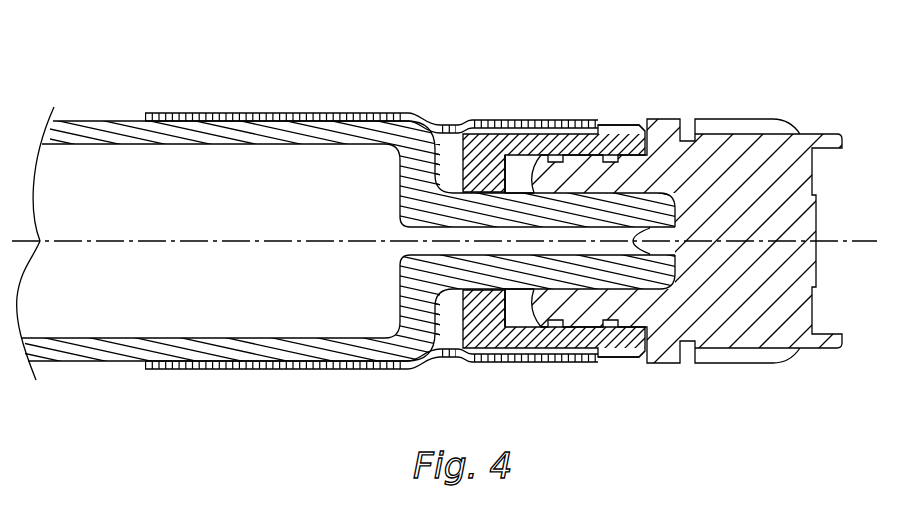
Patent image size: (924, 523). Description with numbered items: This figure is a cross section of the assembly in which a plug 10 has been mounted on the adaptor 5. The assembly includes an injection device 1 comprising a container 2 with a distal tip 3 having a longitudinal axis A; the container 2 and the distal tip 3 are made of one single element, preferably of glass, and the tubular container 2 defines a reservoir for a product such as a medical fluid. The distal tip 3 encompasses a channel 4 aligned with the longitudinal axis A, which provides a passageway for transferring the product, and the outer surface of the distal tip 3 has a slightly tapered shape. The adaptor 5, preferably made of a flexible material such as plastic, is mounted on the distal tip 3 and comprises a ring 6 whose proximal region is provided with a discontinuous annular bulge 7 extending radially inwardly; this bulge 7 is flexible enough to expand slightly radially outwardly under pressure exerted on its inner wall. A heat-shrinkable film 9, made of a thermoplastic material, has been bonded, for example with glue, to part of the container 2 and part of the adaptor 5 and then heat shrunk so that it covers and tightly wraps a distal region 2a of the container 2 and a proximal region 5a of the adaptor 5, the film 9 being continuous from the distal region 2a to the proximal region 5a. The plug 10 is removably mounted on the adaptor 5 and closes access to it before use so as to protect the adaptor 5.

The injection device 1 is at (98, 378).
The container 2 is at (79, 118).
The distal region of the container 2a is at (318, 137).
The distal tip 3 is at (536, 270).
The channel 4 is at (603, 256).
The adaptor 5 is at (617, 120).
The proximal region of the adaptor 5a is at (513, 128).
The ring 6 is at (629, 363).
The discontinuous annular bulge 7 is at (472, 310).
The heat-shrinkable film 9 is at (208, 112).
The plug 10 is at (750, 113).
The longitudinal axis A is at (866, 240).